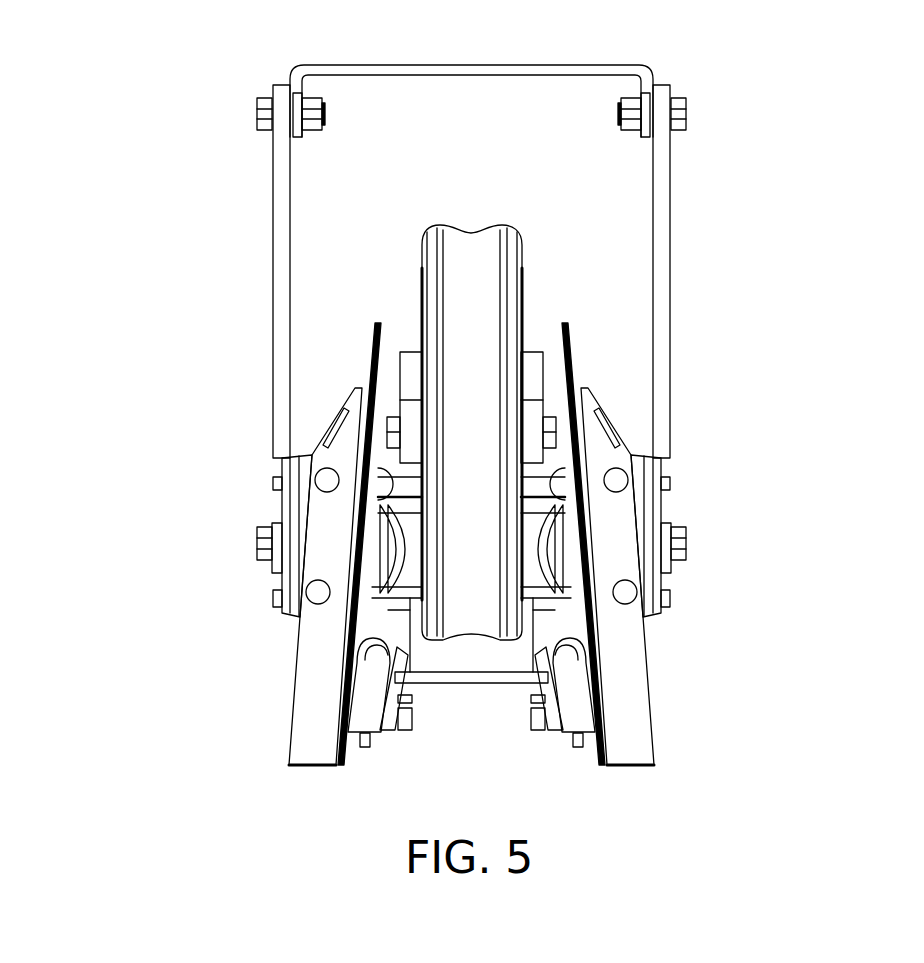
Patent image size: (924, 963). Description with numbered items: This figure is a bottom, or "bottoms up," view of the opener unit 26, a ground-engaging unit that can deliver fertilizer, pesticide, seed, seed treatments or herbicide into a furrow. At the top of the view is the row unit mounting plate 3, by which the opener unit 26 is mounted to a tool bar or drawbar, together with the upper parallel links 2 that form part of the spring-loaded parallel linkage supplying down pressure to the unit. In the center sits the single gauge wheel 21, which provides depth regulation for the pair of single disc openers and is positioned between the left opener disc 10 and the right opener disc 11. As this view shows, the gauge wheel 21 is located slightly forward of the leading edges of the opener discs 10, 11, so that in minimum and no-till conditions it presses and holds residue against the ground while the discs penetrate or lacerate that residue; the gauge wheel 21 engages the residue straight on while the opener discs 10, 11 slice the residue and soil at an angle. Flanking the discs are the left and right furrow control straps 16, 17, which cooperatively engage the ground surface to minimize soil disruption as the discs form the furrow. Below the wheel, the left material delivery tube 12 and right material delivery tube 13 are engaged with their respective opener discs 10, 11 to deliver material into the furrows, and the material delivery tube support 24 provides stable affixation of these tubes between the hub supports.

The upper parallel link 2 is at (273, 178).
The row unit mounting plate 3 is at (468, 64).
The left opener disc 10 is at (572, 350).
The right opener disc 11 is at (373, 352).
The left material delivery tube 12 is at (588, 738).
The right material delivery tube 13 is at (353, 723).
The left furrow control strap 16 is at (660, 692).
The right furrow control strap 17 is at (293, 697).
The gauge wheel 21 is at (471, 228).
The material delivery tube support 24 is at (457, 684).
The opener unit 26 is at (828, 141).